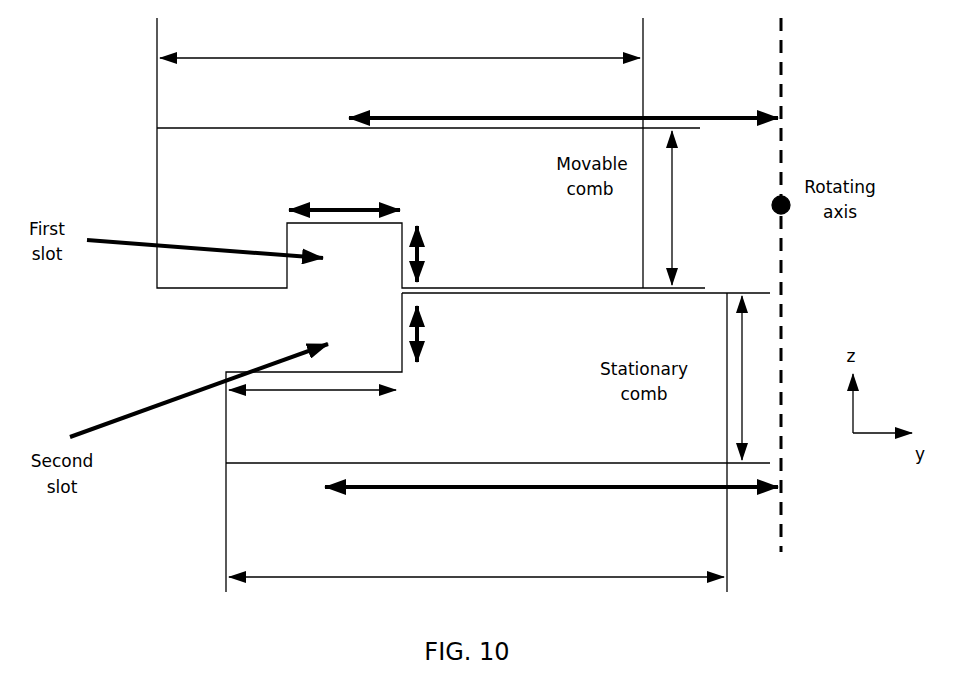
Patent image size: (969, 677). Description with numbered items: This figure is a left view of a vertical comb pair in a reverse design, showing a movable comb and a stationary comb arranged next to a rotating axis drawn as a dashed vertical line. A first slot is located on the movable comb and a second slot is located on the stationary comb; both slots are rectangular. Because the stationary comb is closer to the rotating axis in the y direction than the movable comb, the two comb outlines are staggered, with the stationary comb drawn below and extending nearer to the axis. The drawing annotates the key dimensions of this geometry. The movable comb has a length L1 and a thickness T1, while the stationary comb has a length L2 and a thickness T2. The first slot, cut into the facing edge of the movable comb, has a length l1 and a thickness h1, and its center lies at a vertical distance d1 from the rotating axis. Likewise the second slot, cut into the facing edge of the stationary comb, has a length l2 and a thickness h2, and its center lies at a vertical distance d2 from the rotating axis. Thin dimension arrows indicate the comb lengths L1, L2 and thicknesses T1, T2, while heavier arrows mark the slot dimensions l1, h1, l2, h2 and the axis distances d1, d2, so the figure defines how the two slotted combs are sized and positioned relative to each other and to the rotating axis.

The length of the movable comb L1 is at (400, 46).
The length of the stationary comb L2 is at (476, 563).
The vertical distance between a center of the first slot and the rotating axis d1 is at (563, 105).
The vertical distance between a center of the second slot and the rotating axis d2 is at (551, 507).
The thickness of the movable comb T1 is at (689, 208).
The thickness of the stationary comb T2 is at (756, 378).
The thickness of the first slot h1 is at (437, 254).
The thickness of the second slot h2 is at (437, 334).
The length of the first slot l1 is at (344, 193).
The length of the second slot l2 is at (312, 410).